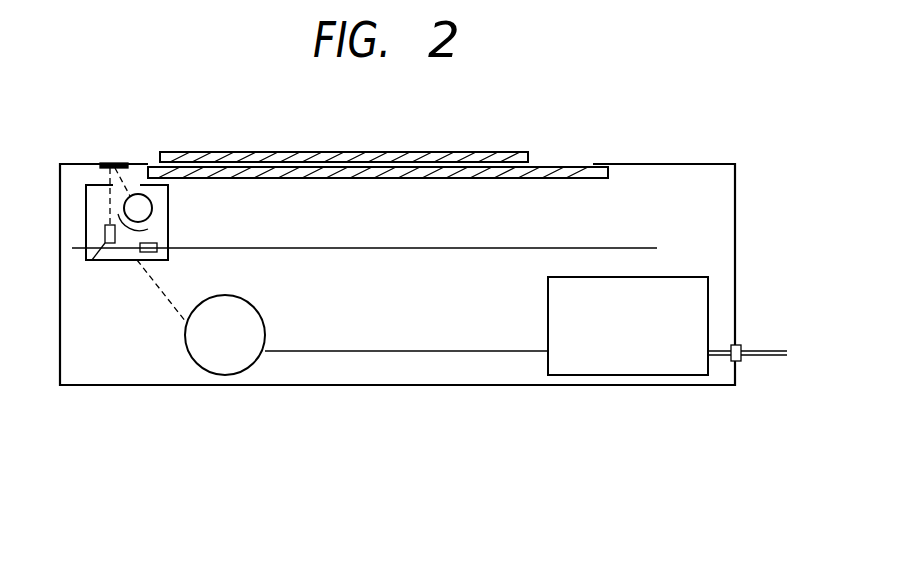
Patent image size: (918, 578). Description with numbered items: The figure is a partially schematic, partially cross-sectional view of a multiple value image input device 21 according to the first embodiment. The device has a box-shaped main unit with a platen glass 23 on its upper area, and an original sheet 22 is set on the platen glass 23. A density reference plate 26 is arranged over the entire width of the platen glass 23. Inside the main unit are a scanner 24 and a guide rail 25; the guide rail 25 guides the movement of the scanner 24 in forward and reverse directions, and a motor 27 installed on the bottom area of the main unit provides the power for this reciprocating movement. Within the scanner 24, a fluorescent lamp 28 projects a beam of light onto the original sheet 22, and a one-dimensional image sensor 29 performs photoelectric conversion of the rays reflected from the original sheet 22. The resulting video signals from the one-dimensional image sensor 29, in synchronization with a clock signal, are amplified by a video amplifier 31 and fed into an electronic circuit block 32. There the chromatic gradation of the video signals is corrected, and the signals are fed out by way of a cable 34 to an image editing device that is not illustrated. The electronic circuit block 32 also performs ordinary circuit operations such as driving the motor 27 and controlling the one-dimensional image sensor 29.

The multiple value image input device 21 is at (738, 240).
The original sheet 22 is at (478, 158).
The platen glass 23 is at (567, 177).
The scanner 24 is at (130, 262).
The guide rail 25 is at (428, 250).
The density reference plate 26 is at (108, 167).
The motor 27 is at (263, 322).
The fluorescent lamp 28 is at (152, 208).
The one-dimensional image sensor 29 is at (93, 265).
The video amplifier 31 is at (155, 254).
The electronic circuit block 32 is at (548, 302).
The cable 34 is at (768, 345).